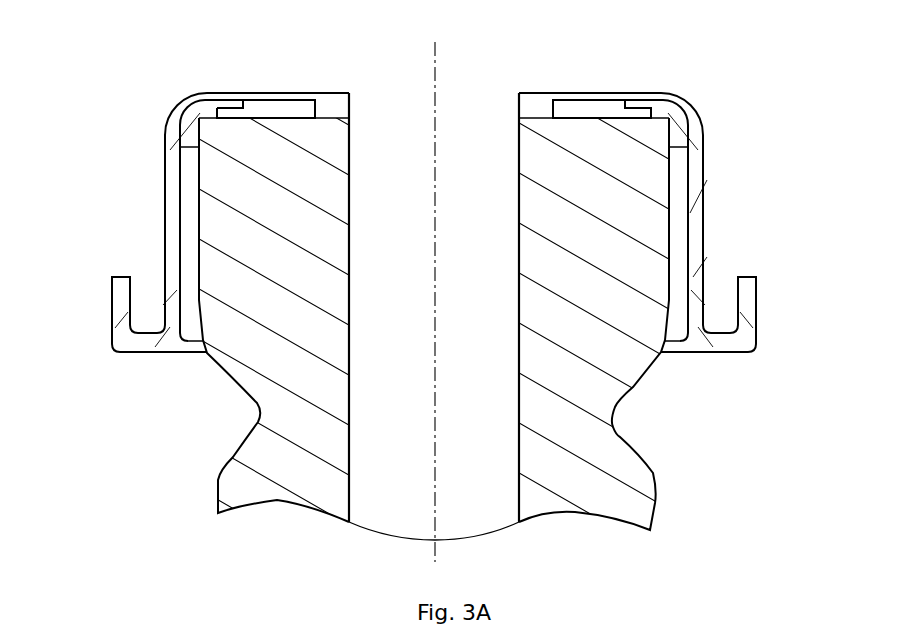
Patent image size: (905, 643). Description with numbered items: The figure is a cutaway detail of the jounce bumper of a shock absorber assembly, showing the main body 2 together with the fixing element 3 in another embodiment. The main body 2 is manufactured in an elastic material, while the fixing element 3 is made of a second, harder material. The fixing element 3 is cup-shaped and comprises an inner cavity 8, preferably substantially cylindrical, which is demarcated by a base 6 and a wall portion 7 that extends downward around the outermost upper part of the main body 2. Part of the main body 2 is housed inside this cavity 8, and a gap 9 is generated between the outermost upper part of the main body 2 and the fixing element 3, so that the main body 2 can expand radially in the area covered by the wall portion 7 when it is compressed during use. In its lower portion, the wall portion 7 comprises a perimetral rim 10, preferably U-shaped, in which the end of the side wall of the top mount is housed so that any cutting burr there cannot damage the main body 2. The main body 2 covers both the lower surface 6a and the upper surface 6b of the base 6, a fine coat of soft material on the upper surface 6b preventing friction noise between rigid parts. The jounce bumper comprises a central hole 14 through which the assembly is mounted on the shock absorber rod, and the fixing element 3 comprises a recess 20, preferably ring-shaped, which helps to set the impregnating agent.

The main body 2 is at (600, 387).
The fixing element 3 is at (706, 146).
The base 6 is at (591, 90).
The lower surface 6a is at (305, 97).
The upper surface 6b is at (271, 100).
The wall portion 7 is at (175, 190).
The inner cavity 8 is at (678, 217).
The gap 9 is at (190, 333).
The perimetral rim 10 is at (772, 293).
The central hole 14 is at (488, 269).
The recess 20 is at (228, 104).